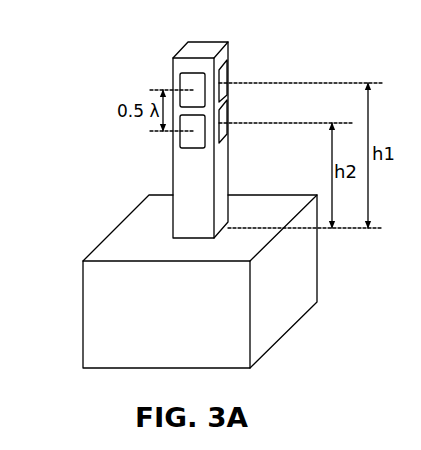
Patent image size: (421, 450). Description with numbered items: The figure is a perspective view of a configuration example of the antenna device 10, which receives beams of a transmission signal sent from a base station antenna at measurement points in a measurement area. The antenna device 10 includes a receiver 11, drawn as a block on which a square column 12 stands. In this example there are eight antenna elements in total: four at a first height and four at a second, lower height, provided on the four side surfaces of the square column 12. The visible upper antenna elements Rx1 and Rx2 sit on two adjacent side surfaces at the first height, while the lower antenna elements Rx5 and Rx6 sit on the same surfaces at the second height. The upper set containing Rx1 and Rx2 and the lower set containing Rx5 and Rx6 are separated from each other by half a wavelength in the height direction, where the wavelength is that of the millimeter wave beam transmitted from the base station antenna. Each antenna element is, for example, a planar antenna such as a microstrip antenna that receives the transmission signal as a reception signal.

The antenna device 10 is at (51, 80).
The receiver 11 is at (128, 219).
The square column 12 is at (205, 42).
The antenna element Rx1 is at (173, 82).
The antenna element Rx2 is at (221, 80).
The antenna element Rx5 is at (173, 139).
The antenna element Rx6 is at (221, 119).